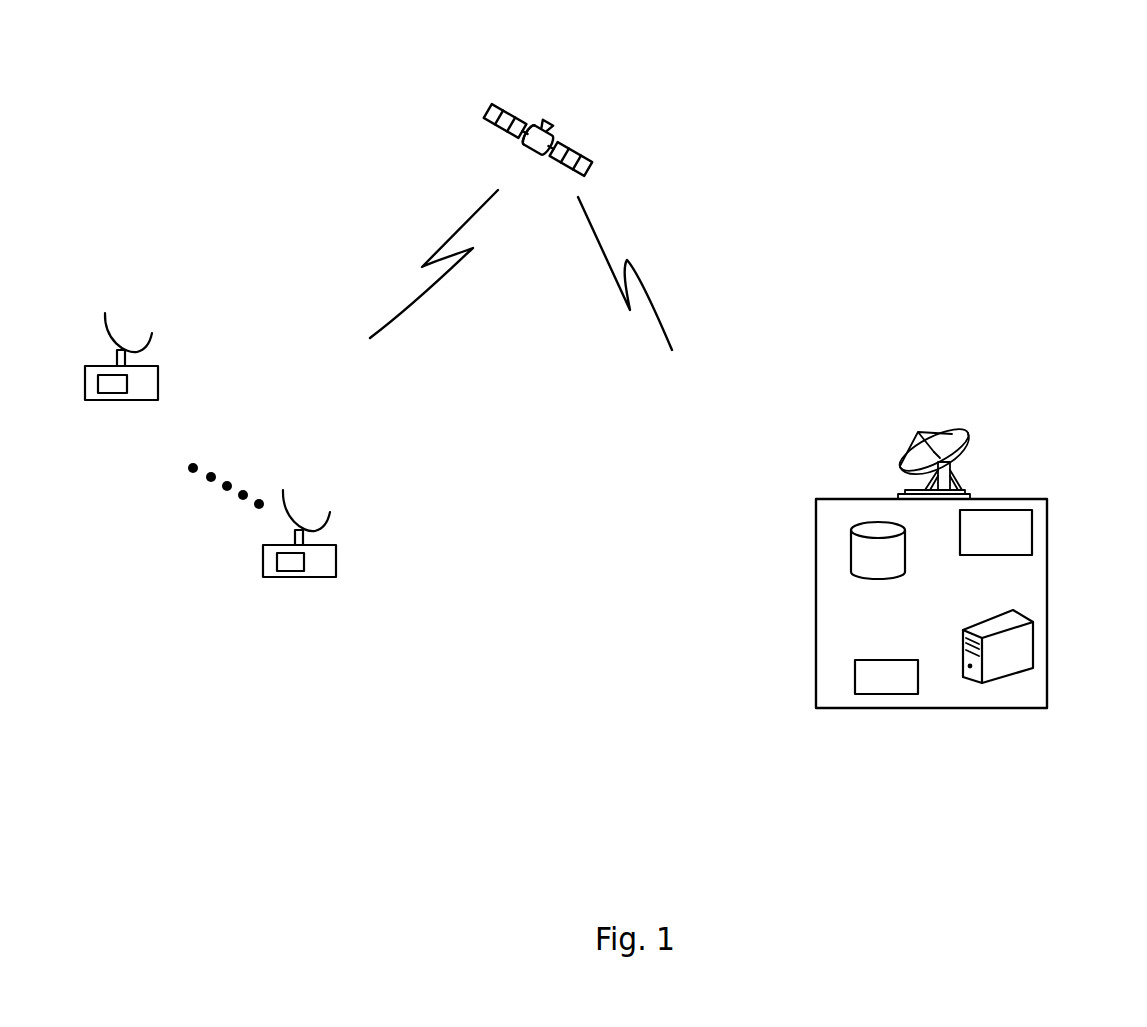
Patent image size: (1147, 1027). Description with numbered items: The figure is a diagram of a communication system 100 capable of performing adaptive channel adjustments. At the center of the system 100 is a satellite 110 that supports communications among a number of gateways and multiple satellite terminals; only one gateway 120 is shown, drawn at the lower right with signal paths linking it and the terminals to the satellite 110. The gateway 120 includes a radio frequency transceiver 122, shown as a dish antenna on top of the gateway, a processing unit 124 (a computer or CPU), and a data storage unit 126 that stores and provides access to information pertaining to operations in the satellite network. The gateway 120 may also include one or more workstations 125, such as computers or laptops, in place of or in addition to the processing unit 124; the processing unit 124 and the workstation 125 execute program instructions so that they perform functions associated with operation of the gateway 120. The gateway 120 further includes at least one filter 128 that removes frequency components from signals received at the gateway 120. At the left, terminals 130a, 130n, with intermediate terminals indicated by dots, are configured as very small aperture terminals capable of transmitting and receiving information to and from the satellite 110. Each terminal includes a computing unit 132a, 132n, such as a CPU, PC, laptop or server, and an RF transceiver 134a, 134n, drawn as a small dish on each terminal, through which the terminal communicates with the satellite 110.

The communication system 100 is at (958, 86).
The satellite 110 is at (593, 166).
The gateway 120 is at (817, 498).
The radio frequency (RF) transceiver 122 is at (966, 433).
The processing unit 124 is at (880, 694).
The workstation 125 is at (1013, 672).
The data storage unit 126 is at (888, 583).
The filter 128 is at (1032, 532).
The satellite terminal 130a is at (170, 378).
The satellite terminal 130n is at (348, 557).
The computing unit 132a is at (110, 400).
The computing unit 132n is at (287, 577).
The RF transceiver 134a is at (137, 352).
The RF transceiver 134n is at (317, 530).